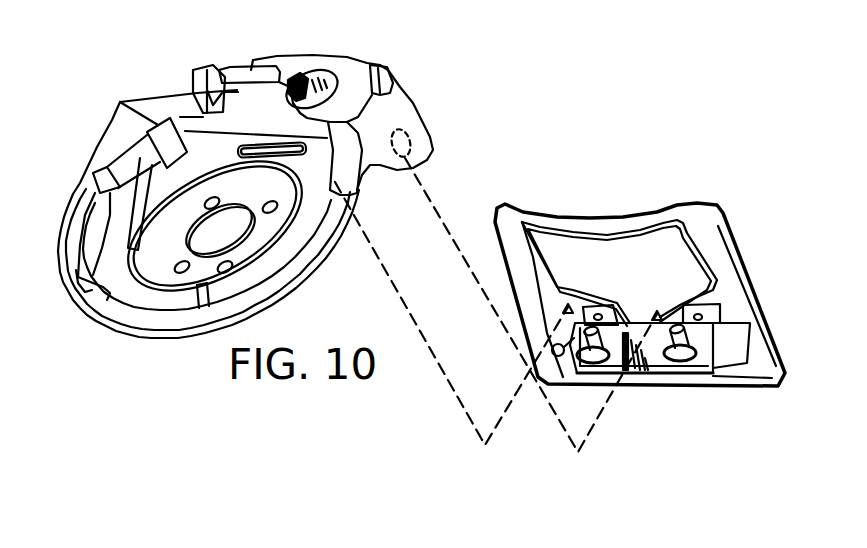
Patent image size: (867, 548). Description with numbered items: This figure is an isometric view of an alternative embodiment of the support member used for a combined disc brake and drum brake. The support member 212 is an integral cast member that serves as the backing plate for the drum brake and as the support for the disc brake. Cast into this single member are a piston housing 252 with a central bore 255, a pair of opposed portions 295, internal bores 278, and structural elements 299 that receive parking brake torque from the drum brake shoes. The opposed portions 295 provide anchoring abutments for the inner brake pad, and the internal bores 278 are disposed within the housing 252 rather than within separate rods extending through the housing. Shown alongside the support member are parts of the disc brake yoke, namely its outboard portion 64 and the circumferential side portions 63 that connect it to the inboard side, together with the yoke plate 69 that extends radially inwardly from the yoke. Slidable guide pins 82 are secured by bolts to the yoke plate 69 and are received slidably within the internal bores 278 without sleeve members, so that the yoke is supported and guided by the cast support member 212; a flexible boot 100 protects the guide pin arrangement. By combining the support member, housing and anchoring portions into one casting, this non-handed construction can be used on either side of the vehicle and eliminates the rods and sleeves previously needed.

The support member 212 is at (228, 214).
The piston housing 252 is at (430, 140).
The central bore 255 is at (313, 78).
The opposed portions 295 is at (311, 70).
The internal bores 278 is at (446, 163).
The structural elements 299 is at (127, 134).
The outboard portion 64 is at (500, 210).
The circumferential side portions 63 is at (512, 283).
The yoke plate 69 is at (651, 380).
The slidable guide pins 82 is at (581, 372).
The flexible boot 100 is at (711, 374).